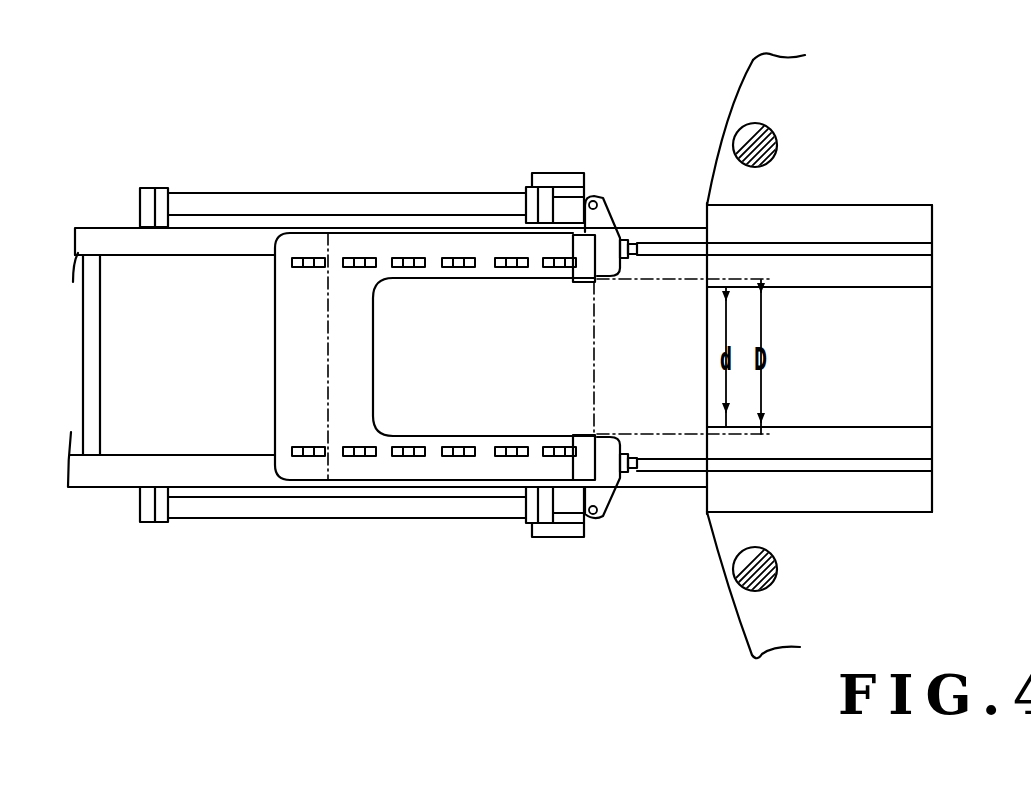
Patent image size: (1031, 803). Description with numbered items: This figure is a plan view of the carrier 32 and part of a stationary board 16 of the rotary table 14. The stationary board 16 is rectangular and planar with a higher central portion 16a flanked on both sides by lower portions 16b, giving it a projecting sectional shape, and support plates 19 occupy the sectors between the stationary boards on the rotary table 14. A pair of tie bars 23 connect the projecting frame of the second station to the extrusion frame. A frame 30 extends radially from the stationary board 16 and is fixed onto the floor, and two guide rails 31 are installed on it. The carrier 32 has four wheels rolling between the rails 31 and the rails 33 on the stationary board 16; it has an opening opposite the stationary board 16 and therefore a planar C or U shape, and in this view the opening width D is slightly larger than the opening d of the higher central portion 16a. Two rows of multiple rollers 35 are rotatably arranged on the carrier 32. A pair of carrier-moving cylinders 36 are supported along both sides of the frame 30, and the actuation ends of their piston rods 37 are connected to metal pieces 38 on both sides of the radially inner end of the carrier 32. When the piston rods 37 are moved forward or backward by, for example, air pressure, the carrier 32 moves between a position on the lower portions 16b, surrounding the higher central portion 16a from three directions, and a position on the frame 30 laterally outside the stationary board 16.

The rotary table 14 is at (715, 140).
The stationary board 16 is at (917, 188).
The higher central portion 16a is at (907, 287).
The lower portion 16b is at (865, 203).
The support plate 19 is at (737, 96).
The tie bar 23 is at (763, 127).
The frame 30 is at (112, 487).
The guide rail 31 is at (660, 242).
The carrier 32 is at (435, 248).
The rail 33 is at (805, 242).
The roller 35 is at (305, 268).
The carrier-moving cylinder 36 is at (322, 193).
The piston rod 37 is at (568, 195).
The metal piece 38 is at (613, 208).